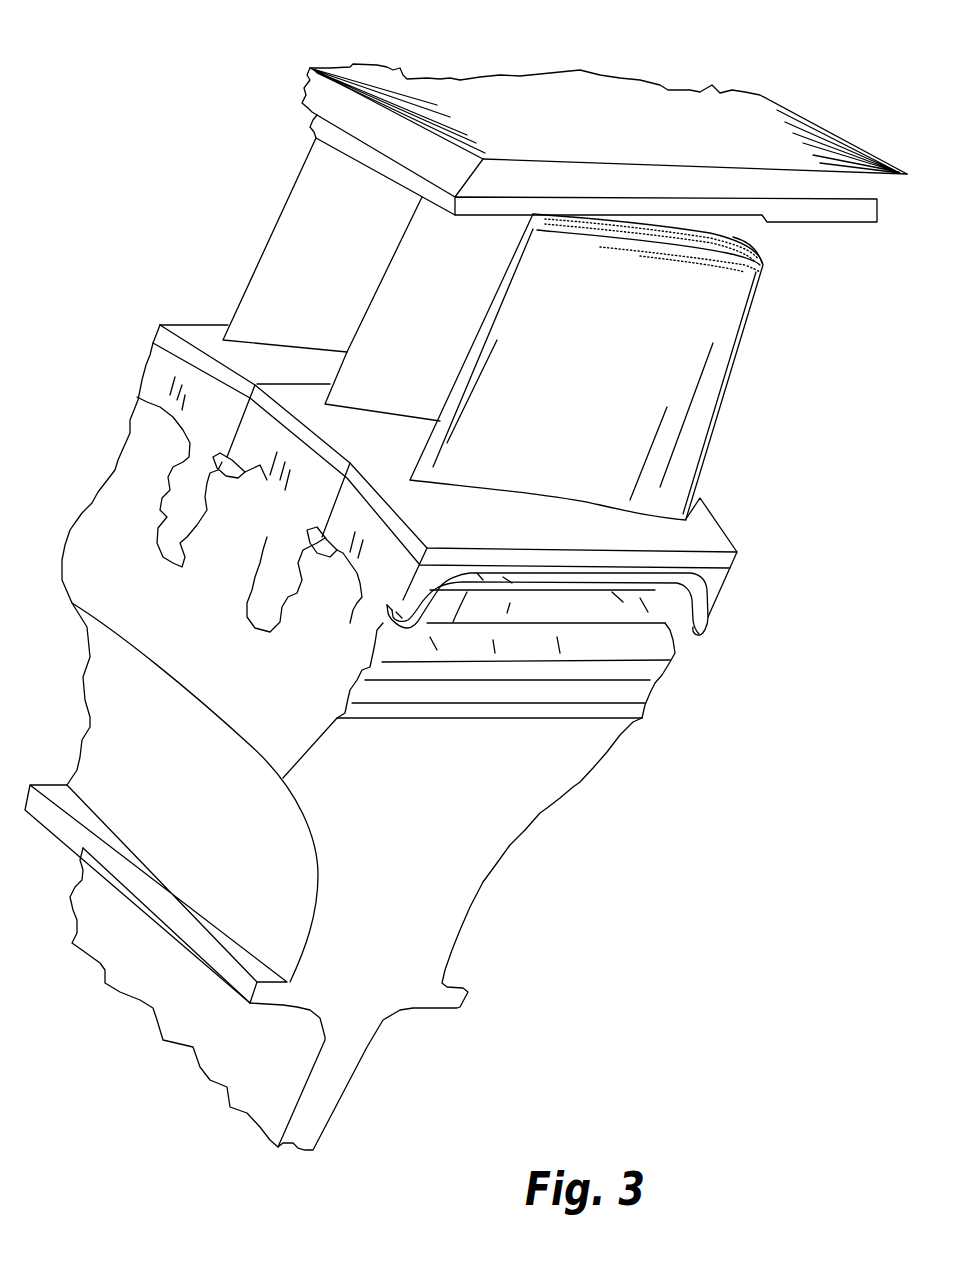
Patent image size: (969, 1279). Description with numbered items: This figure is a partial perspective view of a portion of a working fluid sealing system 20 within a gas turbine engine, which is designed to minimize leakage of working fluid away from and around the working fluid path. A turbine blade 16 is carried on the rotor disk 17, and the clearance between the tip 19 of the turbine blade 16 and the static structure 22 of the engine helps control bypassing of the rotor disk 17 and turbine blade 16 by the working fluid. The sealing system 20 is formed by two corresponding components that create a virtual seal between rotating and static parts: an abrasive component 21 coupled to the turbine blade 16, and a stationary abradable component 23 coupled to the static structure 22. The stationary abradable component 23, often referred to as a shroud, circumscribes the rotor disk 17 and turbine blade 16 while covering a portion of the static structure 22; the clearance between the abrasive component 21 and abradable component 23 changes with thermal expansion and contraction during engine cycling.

The turbine blade 16 is at (307, 260).
The rotor disk 17 is at (445, 875).
The tip 19 is at (762, 270).
The working fluid sealing system 20 is at (852, 93).
The abrasive component 21 is at (763, 250).
The static structure 22 is at (310, 105).
The stationary abradable component 23 is at (393, 168).